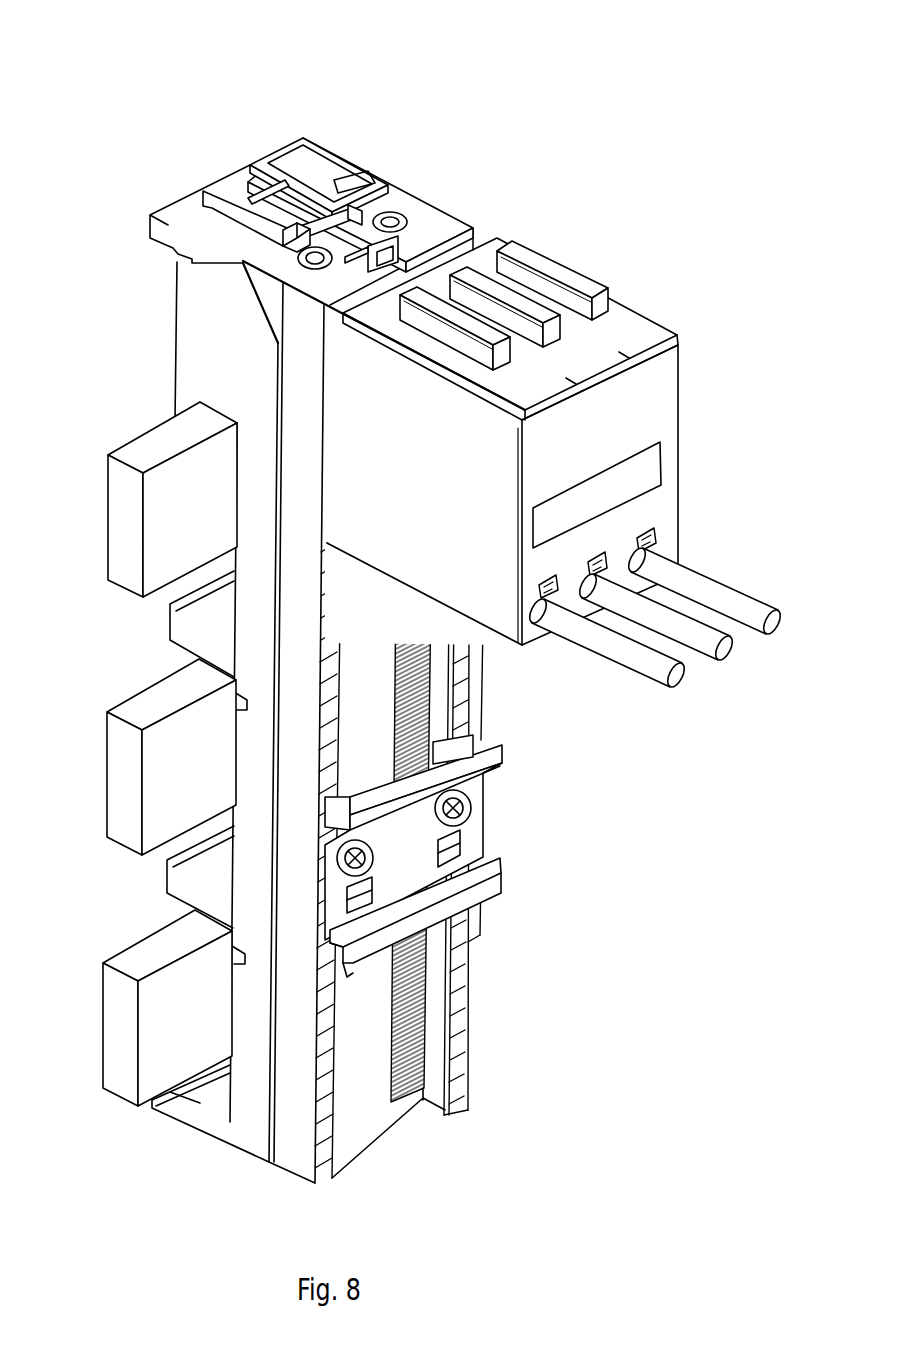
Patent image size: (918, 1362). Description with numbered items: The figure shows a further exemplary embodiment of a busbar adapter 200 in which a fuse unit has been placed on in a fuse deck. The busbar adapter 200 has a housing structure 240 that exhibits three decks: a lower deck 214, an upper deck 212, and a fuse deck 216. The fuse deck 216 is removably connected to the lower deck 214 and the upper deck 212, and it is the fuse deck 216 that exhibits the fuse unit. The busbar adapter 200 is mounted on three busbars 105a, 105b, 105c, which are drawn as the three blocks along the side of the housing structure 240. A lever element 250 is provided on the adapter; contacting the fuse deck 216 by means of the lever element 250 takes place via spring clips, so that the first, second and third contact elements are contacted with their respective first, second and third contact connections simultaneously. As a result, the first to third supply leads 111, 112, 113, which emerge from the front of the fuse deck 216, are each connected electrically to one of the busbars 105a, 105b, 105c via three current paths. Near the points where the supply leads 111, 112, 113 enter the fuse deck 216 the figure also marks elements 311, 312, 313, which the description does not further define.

The busbar adapter 200 is at (408, 592).
The lower deck 214 is at (316, 153).
The upper deck 212 is at (412, 198).
The housing structure 240 is at (366, 205).
The fuse deck 216 is at (520, 443).
The lever element 250 is at (302, 272).
The busbar 105a is at (120, 553).
The busbar 105b is at (118, 770).
The busbar 105c is at (117, 1033).
The first terminal opening 311 is at (548, 598).
The second terminal opening 312 is at (603, 555).
The third terminal opening 313 is at (662, 528).
The first supply lead 111 is at (651, 665).
The second supply lead 112 is at (707, 640).
The third supply lead 113 is at (751, 620).